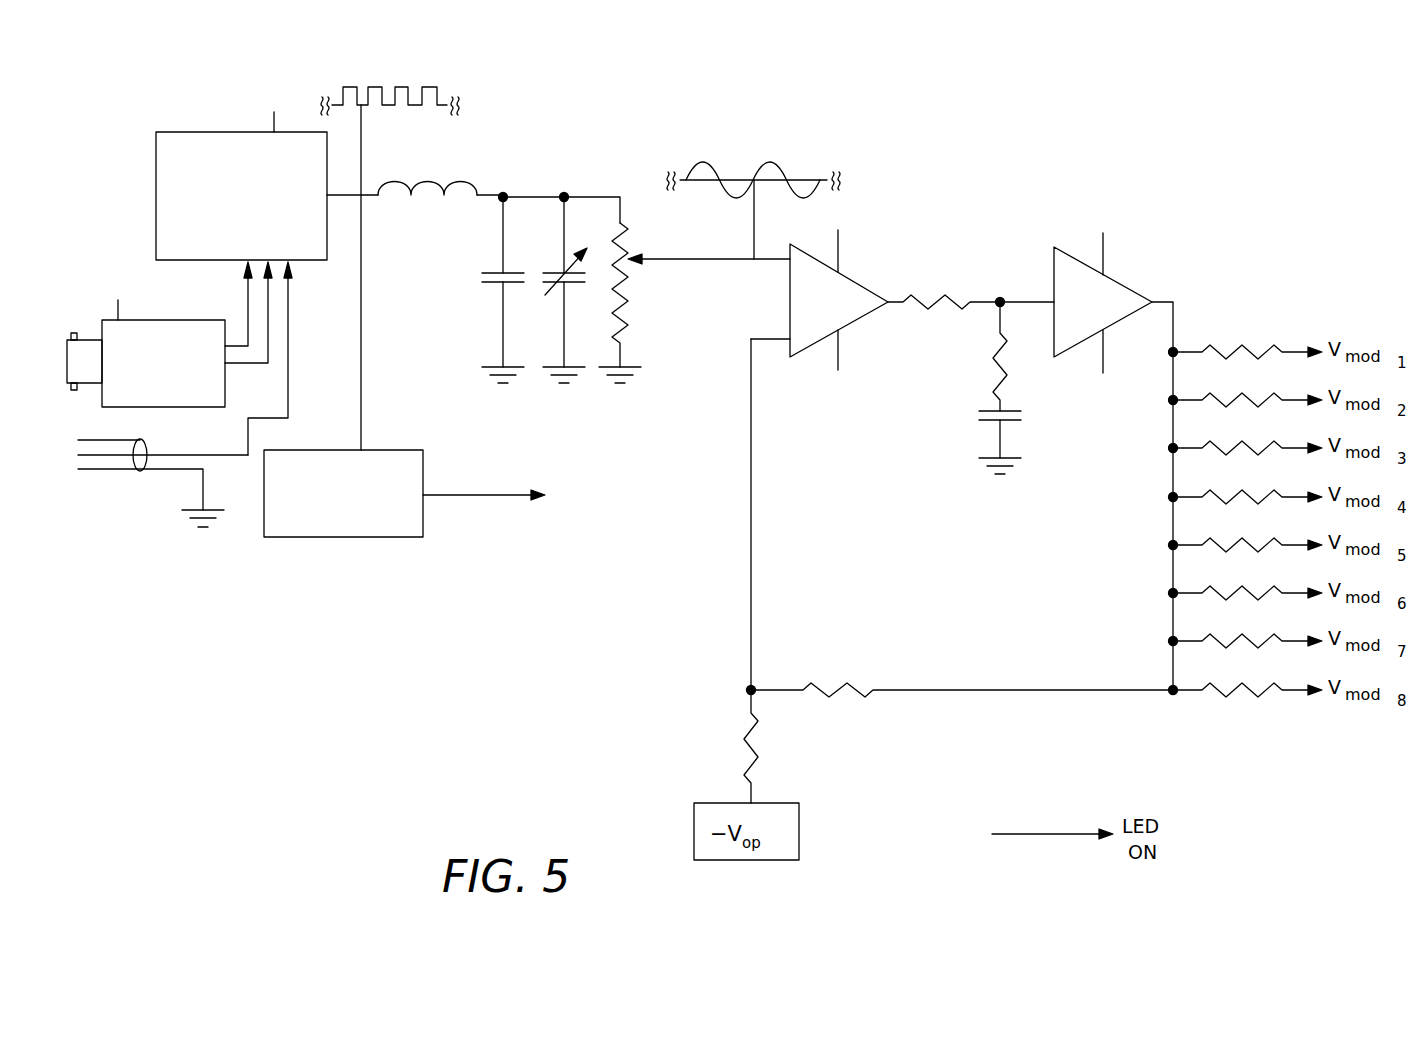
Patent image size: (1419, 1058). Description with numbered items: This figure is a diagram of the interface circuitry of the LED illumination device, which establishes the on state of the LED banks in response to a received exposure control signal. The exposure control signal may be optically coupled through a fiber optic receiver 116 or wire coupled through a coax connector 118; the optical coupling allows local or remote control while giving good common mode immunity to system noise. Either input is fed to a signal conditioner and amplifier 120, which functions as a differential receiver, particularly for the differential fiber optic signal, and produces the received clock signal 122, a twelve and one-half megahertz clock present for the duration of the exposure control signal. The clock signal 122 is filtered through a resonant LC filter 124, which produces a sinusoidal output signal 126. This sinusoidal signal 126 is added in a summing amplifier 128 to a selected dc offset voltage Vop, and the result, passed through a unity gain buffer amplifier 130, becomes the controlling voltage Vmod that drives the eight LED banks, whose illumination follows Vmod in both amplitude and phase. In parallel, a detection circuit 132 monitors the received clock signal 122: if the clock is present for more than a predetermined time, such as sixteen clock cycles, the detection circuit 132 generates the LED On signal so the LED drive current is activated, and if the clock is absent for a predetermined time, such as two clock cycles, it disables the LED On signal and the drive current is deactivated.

The fiber optic receiver 116 is at (170, 320).
The coax connector 118 is at (147, 452).
The signal conditioner and amplifier 120 is at (210, 132).
The received clock signal 122 is at (438, 104).
The resonant LC filter 124 is at (509, 184).
The sinusoidal output signal 126 is at (804, 178).
The summing amplifier 128 is at (862, 287).
The unity gain buffer amplifier 130 is at (1126, 286).
The detection circuit 132 is at (388, 450).